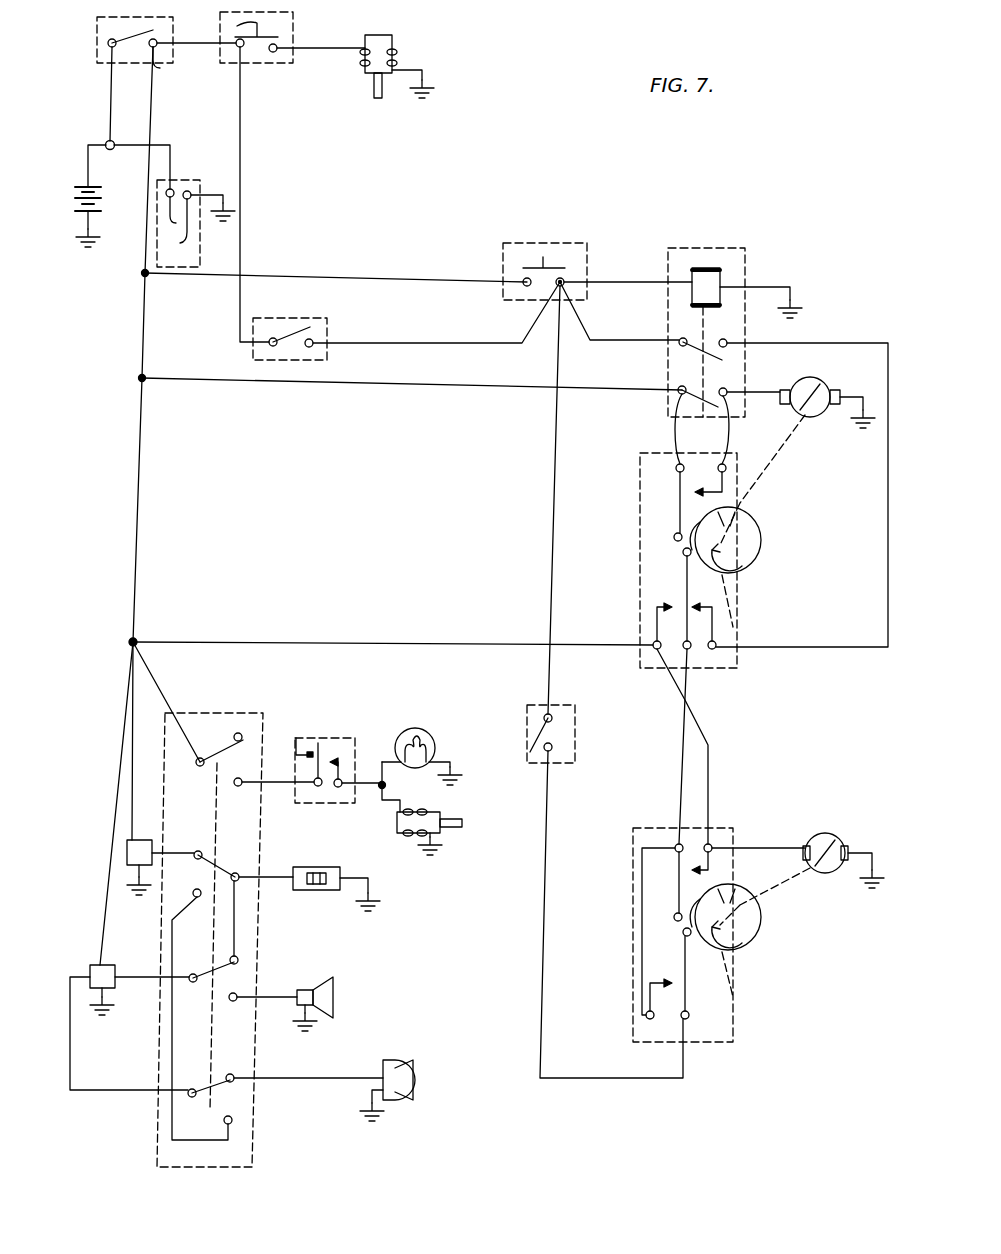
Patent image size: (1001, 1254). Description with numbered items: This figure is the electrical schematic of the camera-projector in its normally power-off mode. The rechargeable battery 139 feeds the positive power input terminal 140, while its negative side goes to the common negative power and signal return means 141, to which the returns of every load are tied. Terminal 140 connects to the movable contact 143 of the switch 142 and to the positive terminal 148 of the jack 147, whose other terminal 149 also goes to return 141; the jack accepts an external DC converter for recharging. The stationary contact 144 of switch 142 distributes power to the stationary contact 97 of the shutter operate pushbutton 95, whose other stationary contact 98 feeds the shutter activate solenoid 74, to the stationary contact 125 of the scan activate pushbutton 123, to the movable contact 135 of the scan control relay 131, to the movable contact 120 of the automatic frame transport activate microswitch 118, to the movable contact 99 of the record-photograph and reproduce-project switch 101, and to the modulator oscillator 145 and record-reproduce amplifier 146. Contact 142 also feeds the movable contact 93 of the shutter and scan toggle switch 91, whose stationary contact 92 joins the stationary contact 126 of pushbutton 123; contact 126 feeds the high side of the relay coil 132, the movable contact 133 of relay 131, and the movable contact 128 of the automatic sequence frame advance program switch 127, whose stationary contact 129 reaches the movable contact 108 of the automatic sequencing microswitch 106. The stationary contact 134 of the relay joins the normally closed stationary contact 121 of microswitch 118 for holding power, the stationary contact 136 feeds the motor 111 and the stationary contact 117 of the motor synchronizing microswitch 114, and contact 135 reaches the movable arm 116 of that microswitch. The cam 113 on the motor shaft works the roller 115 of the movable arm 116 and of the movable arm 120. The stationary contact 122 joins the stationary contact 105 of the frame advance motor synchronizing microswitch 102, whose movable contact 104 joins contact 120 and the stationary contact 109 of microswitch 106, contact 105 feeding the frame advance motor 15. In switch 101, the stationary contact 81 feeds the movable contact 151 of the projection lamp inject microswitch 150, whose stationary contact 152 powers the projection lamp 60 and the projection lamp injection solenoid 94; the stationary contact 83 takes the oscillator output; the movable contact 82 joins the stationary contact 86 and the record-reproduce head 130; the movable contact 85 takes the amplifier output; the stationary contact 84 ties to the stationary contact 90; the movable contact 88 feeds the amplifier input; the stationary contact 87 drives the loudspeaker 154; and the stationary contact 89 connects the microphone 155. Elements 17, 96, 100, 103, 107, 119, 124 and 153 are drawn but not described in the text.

The frame advance motor 15 is at (832, 836).
The cam 17 is at (762, 918).
The projection lamp 60 is at (420, 730).
The shutter activate solenoid 74 is at (393, 42).
The stationary contact 81 is at (234, 783).
The movable contact 82 is at (239, 876).
The stationary contact 83 is at (202, 853).
The stationary contact 84 is at (193, 892).
The movable contact 85 is at (193, 982).
The stationary contact 86 is at (238, 960).
The stationary contact 87 is at (237, 995).
The movable contact 88 is at (192, 1097).
The stationary contact 89 is at (232, 1075).
The stationary contact 90 is at (232, 1120).
The shutter and scan toggle switch 91 is at (310, 318).
The stationary contact 92 is at (313, 346).
The movable contact 93 is at (269, 346).
The projection lamp injection solenoid 94 is at (441, 818).
The shutter operate pushbutton 95 is at (293, 20).
The bridging contact 96 is at (236, 26).
The stationary contact 97 is at (243, 50).
The stationary contact 98 is at (275, 53).
The movable contact 99 is at (196, 765).
The switch contact 100 is at (240, 733).
The record-photograph and reproduce-project switch 101 is at (185, 715).
The frame advance motor synchronizing microswitch 102 is at (720, 828).
The cam follower contact 103 is at (674, 917).
The movable contact 104 is at (675, 848).
The stationary contact 105 is at (712, 848).
The automatic sequencing microswitch 106 is at (735, 1016).
The contact 107 is at (683, 932).
The movable contact 108 is at (689, 1016).
The stationary contact 109 is at (646, 1016).
The motor 111 is at (815, 383).
The cam 113 is at (752, 526).
The motor synchronizing microswitch 114 is at (640, 504).
The roller 115 is at (674, 538).
The movable arm 116 is at (676, 468).
The stationary contact 117 is at (726, 468).
The automatic frame transport activate microswitch 118 is at (725, 584).
The contact 119 is at (683, 552).
The movable arm 120 is at (690, 650).
The stationary contact 121 is at (716, 645).
The stationary contact 122 is at (653, 645).
The scan activate pushbutton 123 is at (512, 243).
The bridging contact 124 is at (546, 259).
The stationary contact 125 is at (523, 286).
The stationary contact 126 is at (565, 285).
The automatic sequence frame advance program switch 127 is at (577, 736).
The movable contact 128 is at (552, 718).
The stationary contact 129 is at (552, 748).
The record-reproduce head 130 is at (310, 867).
The scan control relay 131 is at (740, 249).
The relay coil 132 is at (722, 272).
The movable contact 133 is at (679, 342).
The stationary contact 134 is at (727, 343).
The movable contact 135 is at (678, 390).
The stationary contact 136 is at (727, 392).
The rechargeable battery 139 is at (101, 200).
The positive power input terminal 140 is at (118, 137).
The common negative power and signal return means 141 is at (424, 92).
The switch 142 is at (158, 58).
The movable contact 143 is at (113, 50).
The stationary contact 144 is at (160, 68).
The modulator oscillator 145 is at (127, 853).
The record-reproduce amplifier 146 is at (100, 965).
The jack 147 is at (200, 269).
The positive terminal 148 is at (172, 188).
The terminal 149 is at (190, 192).
The projection lamp inject microswitch 150 is at (330, 738).
The movable contact 151 is at (316, 786).
The stationary contact 152 is at (338, 788).
The relay armature 153 is at (300, 738).
The loudspeaker 154 is at (333, 986).
The microphone 155 is at (413, 1080).